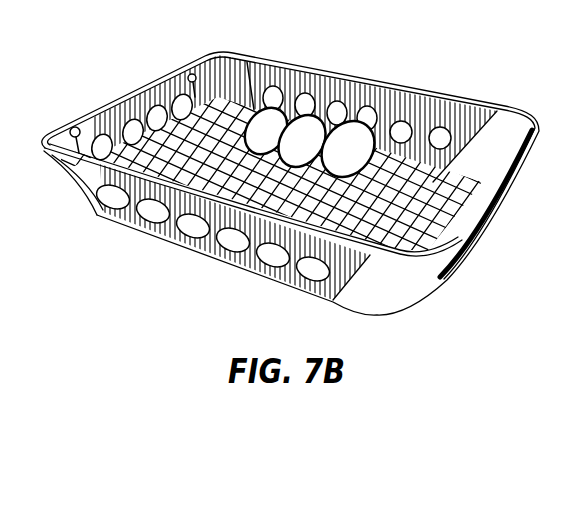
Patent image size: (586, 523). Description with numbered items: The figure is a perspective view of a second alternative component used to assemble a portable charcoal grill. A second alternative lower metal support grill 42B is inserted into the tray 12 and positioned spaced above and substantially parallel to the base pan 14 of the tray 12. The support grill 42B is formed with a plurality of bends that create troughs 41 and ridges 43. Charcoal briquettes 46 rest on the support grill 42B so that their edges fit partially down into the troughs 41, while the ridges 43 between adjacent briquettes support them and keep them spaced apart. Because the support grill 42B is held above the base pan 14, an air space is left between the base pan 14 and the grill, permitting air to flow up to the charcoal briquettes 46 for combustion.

The tray 12 is at (471, 100).
The base pan 14 is at (470, 215).
The troughs 41 is at (399, 121).
The second alternative lower metal support grill 42B is at (203, 68).
The ridges 43 is at (440, 127).
The charcoal briquettes 46 is at (316, 128).